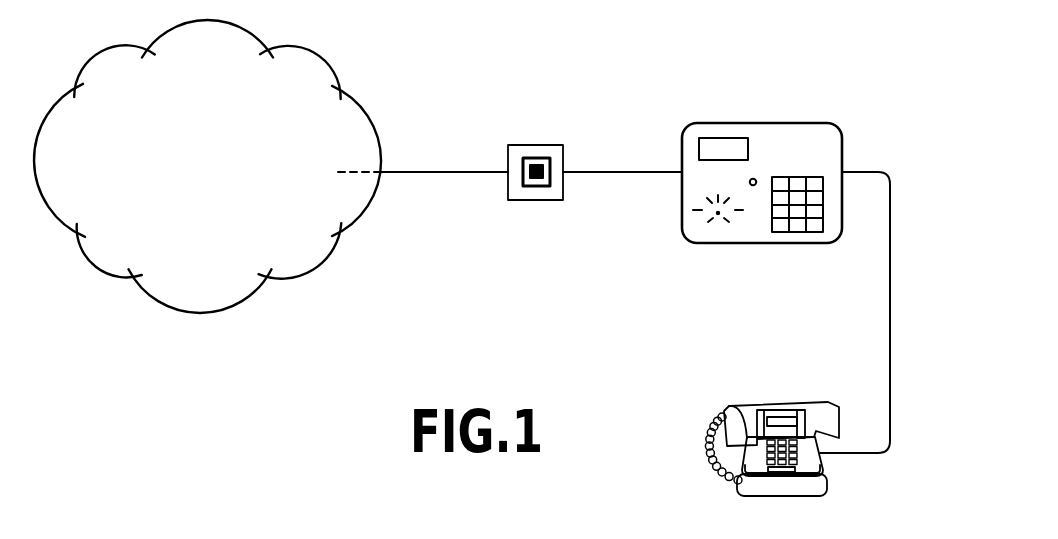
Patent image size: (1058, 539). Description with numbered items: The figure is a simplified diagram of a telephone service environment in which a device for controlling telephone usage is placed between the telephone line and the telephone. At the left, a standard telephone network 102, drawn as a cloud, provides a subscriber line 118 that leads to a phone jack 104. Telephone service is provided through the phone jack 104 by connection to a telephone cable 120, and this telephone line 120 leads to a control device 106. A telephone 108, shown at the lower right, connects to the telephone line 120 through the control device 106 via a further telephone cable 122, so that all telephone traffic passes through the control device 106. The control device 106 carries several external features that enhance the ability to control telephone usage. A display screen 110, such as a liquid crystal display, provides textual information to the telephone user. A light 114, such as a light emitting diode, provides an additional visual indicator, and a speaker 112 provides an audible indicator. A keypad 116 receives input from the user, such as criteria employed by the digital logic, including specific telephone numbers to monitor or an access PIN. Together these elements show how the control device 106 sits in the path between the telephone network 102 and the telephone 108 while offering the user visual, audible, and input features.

The telephone network 102 is at (293, 50).
The phone jack 104 is at (532, 145).
The control device 106 is at (760, 122).
The telephone 108 is at (765, 402).
The display screen 110 is at (723, 140).
The speaker 112 is at (720, 217).
The light 114 is at (755, 178).
The keypad 116 is at (793, 223).
The subscriber line 118 is at (425, 172).
The telephone cable 120 is at (598, 172).
The telephone cable 122 is at (891, 315).